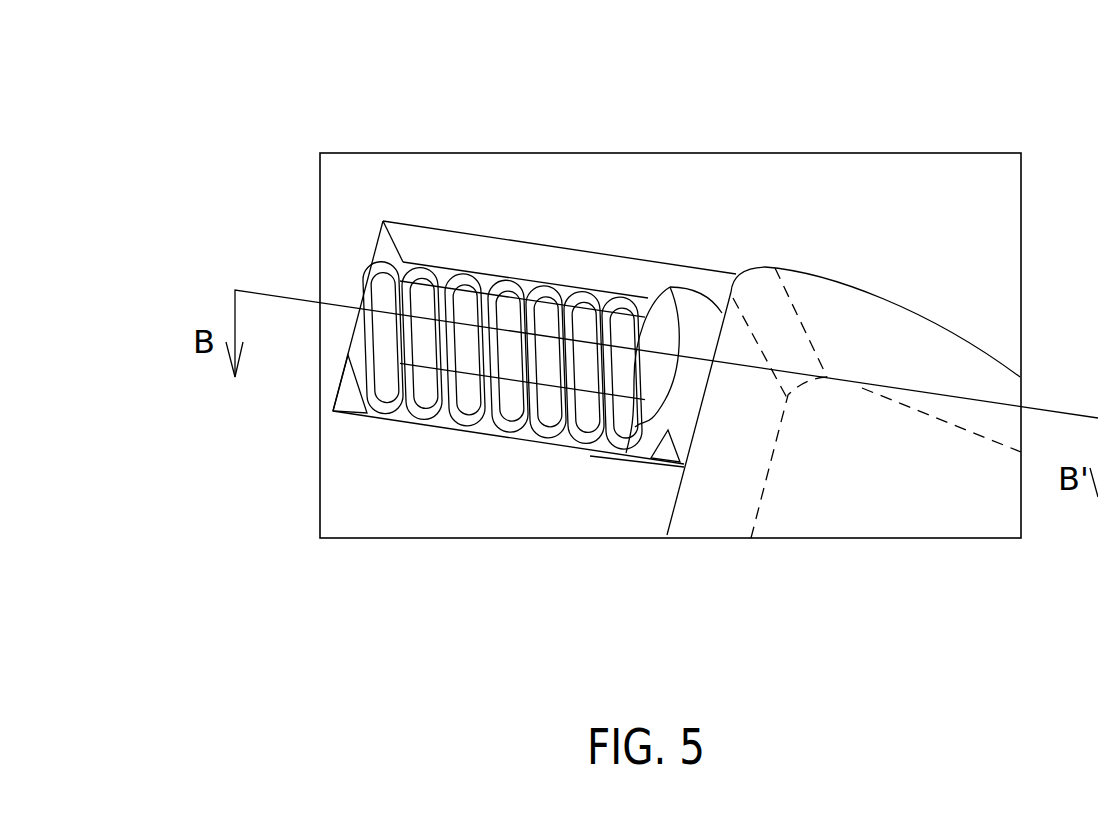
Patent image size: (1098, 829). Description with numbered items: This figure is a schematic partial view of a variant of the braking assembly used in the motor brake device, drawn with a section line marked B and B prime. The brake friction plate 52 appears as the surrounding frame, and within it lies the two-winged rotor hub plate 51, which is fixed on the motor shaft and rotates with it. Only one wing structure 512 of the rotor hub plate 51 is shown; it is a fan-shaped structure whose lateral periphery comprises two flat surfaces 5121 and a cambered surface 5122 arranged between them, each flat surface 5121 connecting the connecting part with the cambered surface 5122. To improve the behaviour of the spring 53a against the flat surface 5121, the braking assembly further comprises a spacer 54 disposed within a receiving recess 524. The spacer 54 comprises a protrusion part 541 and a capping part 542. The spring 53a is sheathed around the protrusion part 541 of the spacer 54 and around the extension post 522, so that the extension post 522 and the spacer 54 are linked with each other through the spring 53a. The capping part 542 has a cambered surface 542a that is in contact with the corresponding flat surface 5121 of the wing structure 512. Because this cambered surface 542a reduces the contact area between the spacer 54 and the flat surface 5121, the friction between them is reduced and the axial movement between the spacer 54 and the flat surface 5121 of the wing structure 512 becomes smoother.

The two-winged rotor hub plate 51 is at (878, 283).
The brake friction plate 52 is at (638, 188).
The wing structure 512 is at (877, 490).
The flat surface 5121 is at (735, 475).
The cambered surface 5122 is at (958, 378).
The extension post 522 is at (467, 393).
The receiving recess 524 is at (485, 283).
The spring 53a is at (428, 415).
The spacer 54 is at (542, 472).
The protrusion part 541 is at (588, 402).
The capping part 542 is at (653, 403).
The cambered surface 542a is at (668, 430).